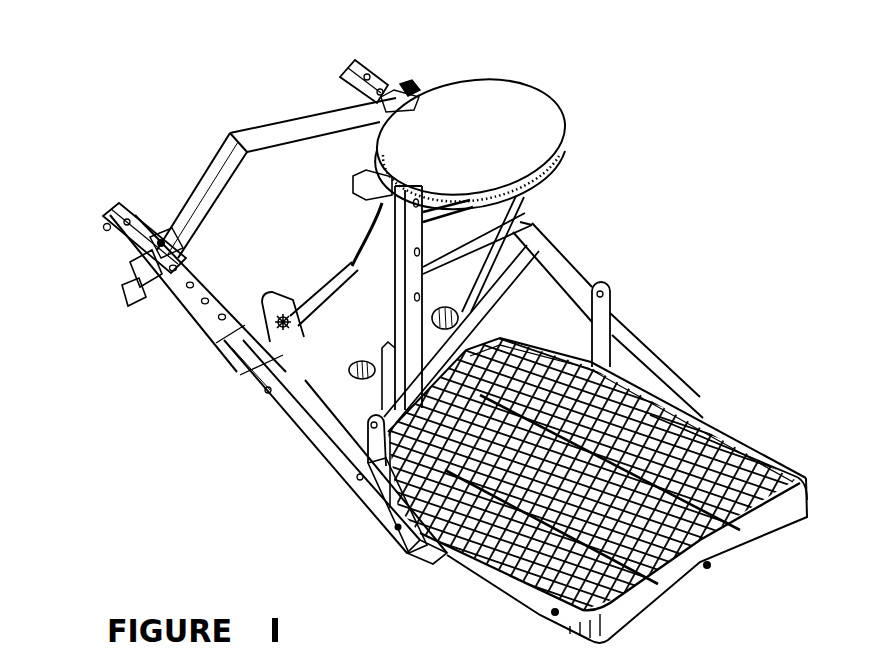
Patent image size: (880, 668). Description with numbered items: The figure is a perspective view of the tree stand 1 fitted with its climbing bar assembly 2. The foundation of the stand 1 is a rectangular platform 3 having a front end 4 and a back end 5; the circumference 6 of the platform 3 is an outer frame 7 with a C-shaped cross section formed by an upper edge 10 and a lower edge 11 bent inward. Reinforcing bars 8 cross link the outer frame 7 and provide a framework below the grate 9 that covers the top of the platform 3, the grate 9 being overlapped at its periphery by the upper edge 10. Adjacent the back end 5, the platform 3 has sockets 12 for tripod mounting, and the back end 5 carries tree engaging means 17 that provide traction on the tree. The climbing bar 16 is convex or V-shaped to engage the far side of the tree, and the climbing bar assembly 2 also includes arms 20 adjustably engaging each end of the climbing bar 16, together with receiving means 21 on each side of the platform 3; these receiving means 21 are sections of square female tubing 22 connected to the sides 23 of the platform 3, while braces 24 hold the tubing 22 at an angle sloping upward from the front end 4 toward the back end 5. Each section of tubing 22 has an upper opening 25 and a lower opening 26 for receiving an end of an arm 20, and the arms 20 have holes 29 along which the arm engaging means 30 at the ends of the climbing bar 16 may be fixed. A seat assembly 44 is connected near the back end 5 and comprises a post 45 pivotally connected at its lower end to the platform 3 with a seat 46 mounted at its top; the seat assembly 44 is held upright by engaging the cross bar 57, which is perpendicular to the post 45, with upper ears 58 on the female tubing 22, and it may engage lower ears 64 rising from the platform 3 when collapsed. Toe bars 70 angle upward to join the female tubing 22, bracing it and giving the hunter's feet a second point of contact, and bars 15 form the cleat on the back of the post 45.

The stand 1 is at (630, 208).
The climbing bar assembly 2 is at (168, 326).
The platform 3 is at (622, 483).
The front end 4 is at (672, 592).
The back end 5 is at (378, 366).
The circumference 6 is at (368, 492).
The outer frame 7 is at (806, 522).
The reinforcing bars 8 is at (742, 434).
The grate 9 is at (750, 522).
The upper edge 10 is at (778, 463).
The lower edge 11 is at (837, 487).
The sockets 12 is at (453, 307).
The bars 15 is at (352, 183).
The climbing bar 16 is at (218, 160).
The tree engaging means 17 is at (386, 368).
The arms 20 is at (384, 84).
The receiving means 21 is at (302, 448).
The female tubing 22 is at (302, 418).
The sides 23 is at (378, 514).
The braces 24 is at (500, 258).
The upper opening 25 is at (235, 345).
The lower opening 26 is at (408, 556).
The holes 29 is at (370, 70).
The arm engaging means 30 is at (118, 276).
The seat assembly 44 is at (213, 198).
The post 45 is at (394, 228).
The seat 46 is at (568, 140).
The cross bar 57 is at (300, 296).
The upper ears 58 is at (262, 380).
The lower ears 64 is at (345, 472).
The toe bars 70 is at (500, 300).